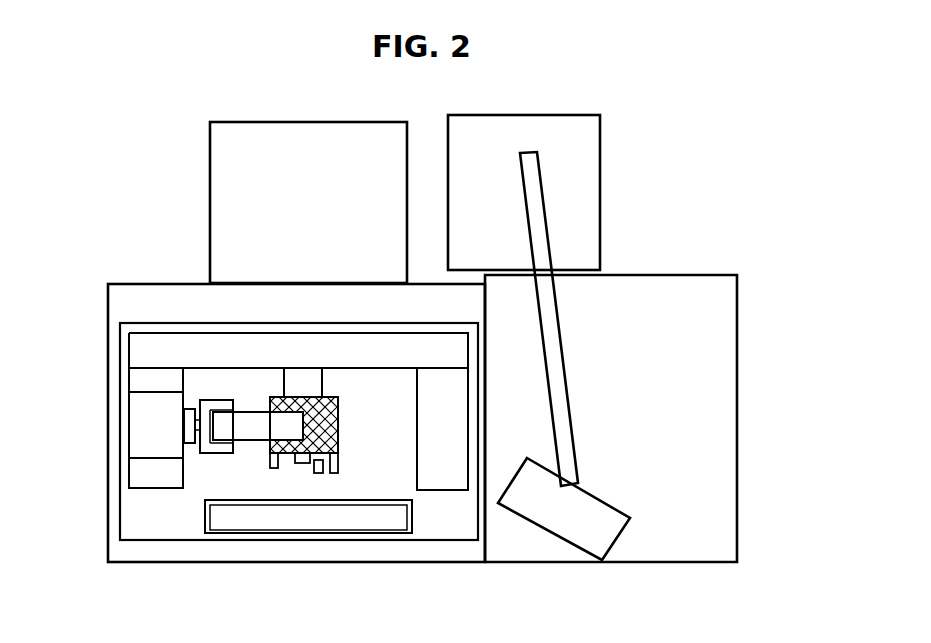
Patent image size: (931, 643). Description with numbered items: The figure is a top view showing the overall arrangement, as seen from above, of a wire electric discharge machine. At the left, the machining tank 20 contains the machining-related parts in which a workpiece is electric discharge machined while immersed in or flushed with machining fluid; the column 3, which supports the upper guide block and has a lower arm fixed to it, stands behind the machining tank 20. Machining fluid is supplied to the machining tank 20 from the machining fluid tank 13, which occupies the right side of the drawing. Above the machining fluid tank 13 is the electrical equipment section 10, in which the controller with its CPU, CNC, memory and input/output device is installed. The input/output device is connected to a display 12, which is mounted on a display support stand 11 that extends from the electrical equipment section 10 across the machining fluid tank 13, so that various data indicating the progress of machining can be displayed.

The column 3 is at (223, 199).
The electrical equipment section 10 is at (557, 175).
The display support stand 11 is at (541, 252).
The display 12 is at (575, 515).
The machining fluid tank 13 is at (704, 392).
The machining tank 20 is at (160, 515).